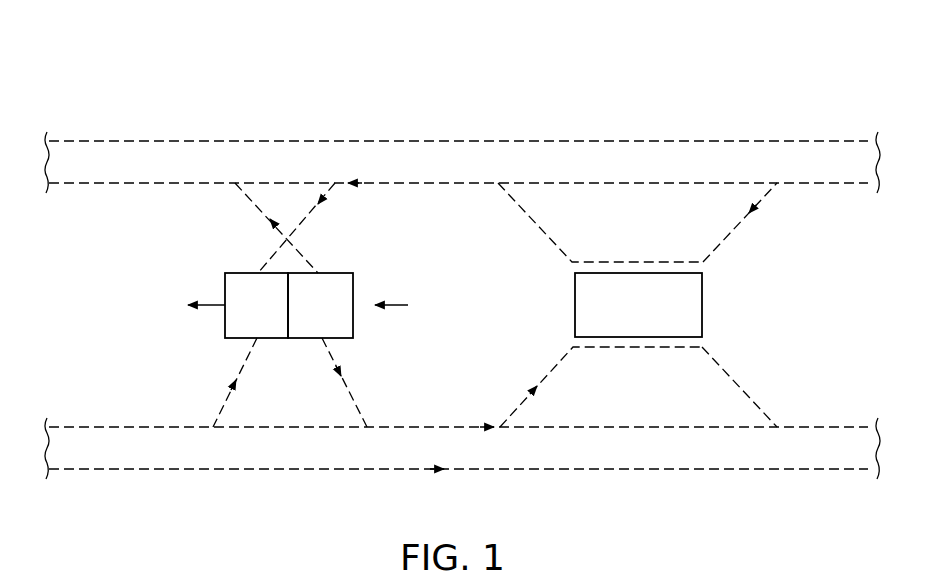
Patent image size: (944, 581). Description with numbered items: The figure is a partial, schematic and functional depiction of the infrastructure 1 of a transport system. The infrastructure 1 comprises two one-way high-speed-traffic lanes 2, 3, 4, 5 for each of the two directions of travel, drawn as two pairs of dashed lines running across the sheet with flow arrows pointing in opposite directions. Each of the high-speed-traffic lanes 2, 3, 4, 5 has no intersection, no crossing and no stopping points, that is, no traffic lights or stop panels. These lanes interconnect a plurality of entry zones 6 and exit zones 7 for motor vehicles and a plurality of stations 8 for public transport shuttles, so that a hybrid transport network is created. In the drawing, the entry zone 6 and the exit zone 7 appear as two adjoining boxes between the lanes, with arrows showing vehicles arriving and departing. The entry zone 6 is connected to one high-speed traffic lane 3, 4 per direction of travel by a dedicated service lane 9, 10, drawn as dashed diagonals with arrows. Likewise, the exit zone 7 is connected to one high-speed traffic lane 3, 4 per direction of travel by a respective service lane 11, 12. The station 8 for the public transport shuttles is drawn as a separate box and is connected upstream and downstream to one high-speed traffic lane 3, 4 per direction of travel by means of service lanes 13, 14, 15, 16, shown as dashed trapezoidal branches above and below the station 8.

The infrastructure 1 is at (214, 94).
The high-speed-traffic lane 2 is at (602, 140).
The high-speed-traffic lane 3 is at (658, 183).
The high-speed-traffic lane 4 is at (688, 428).
The high-speed-traffic lane 5 is at (638, 471).
The entry zone 6 is at (325, 318).
The exit zone 7 is at (264, 318).
The station 8 is at (645, 318).
The service lane 9 is at (242, 188).
The service lane 10 is at (355, 410).
The service lane 11 is at (327, 195).
The service lane 12 is at (220, 407).
The service lane 13 is at (722, 233).
The service lane 14 is at (532, 225).
The service lane 15 is at (558, 363).
The service lane 16 is at (735, 377).